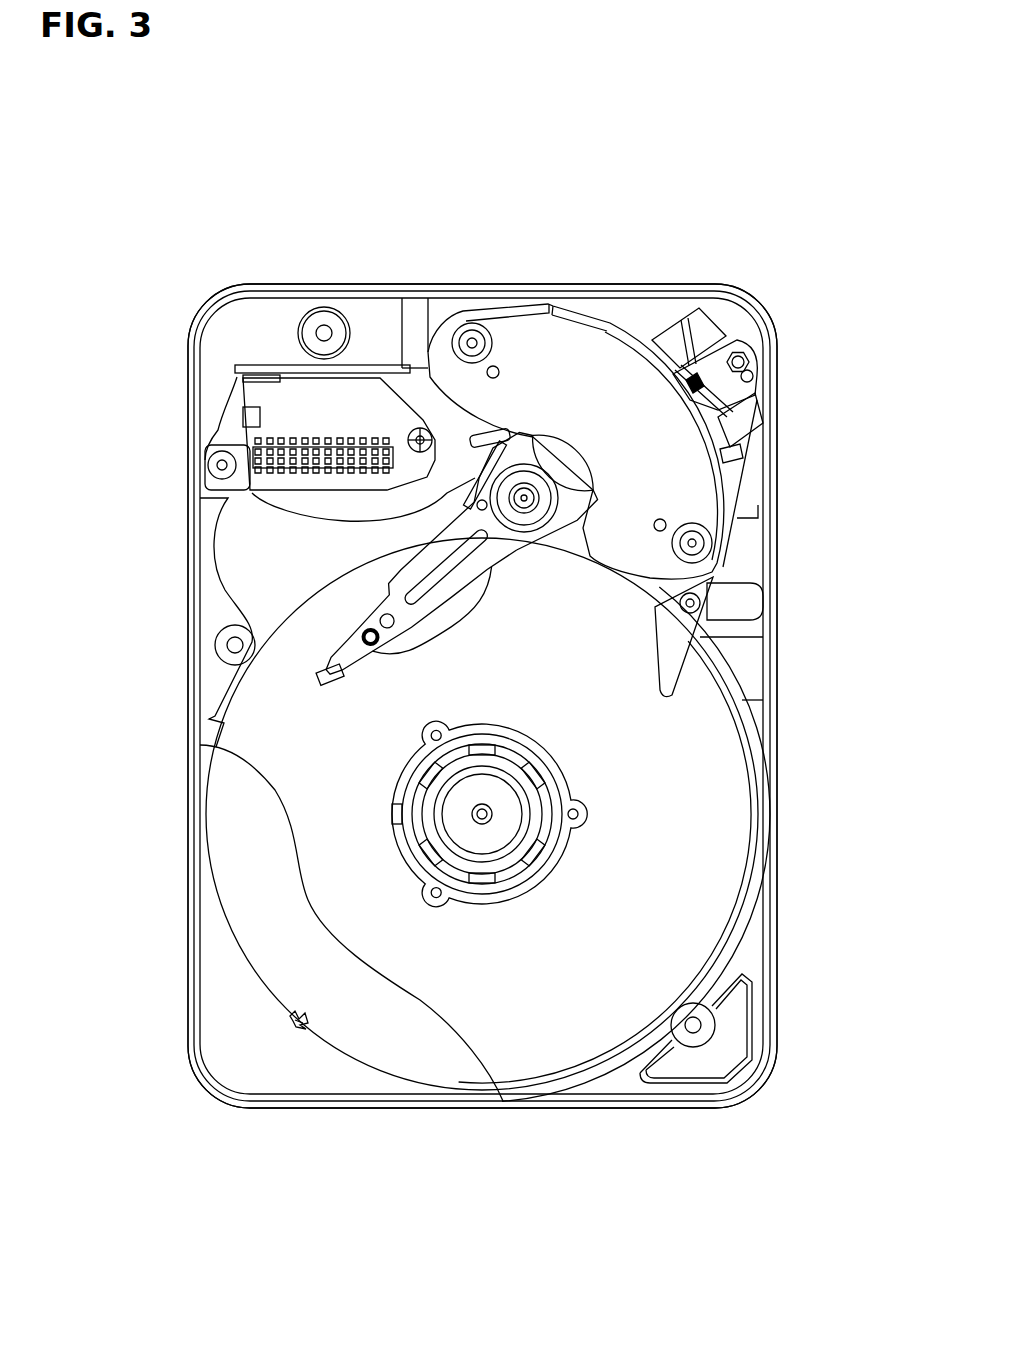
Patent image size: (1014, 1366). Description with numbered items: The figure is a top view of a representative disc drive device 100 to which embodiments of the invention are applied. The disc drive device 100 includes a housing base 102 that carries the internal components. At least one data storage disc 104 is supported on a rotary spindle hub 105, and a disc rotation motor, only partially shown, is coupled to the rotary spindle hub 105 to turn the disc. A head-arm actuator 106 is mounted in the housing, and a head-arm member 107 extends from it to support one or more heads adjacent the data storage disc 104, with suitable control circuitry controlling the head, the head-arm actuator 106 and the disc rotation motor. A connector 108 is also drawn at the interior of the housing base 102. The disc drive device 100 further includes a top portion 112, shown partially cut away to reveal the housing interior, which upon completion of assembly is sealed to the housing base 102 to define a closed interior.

The disc drive device 100 is at (398, 236).
The housing base 102 is at (186, 963).
The data storage disc 104 is at (732, 830).
The rotary spindle hub 105 is at (508, 813).
The head-arm actuator 106 is at (628, 340).
The head-arm member 107 is at (500, 538).
The connector 108 is at (260, 450).
The top portion 112 is at (290, 1073).